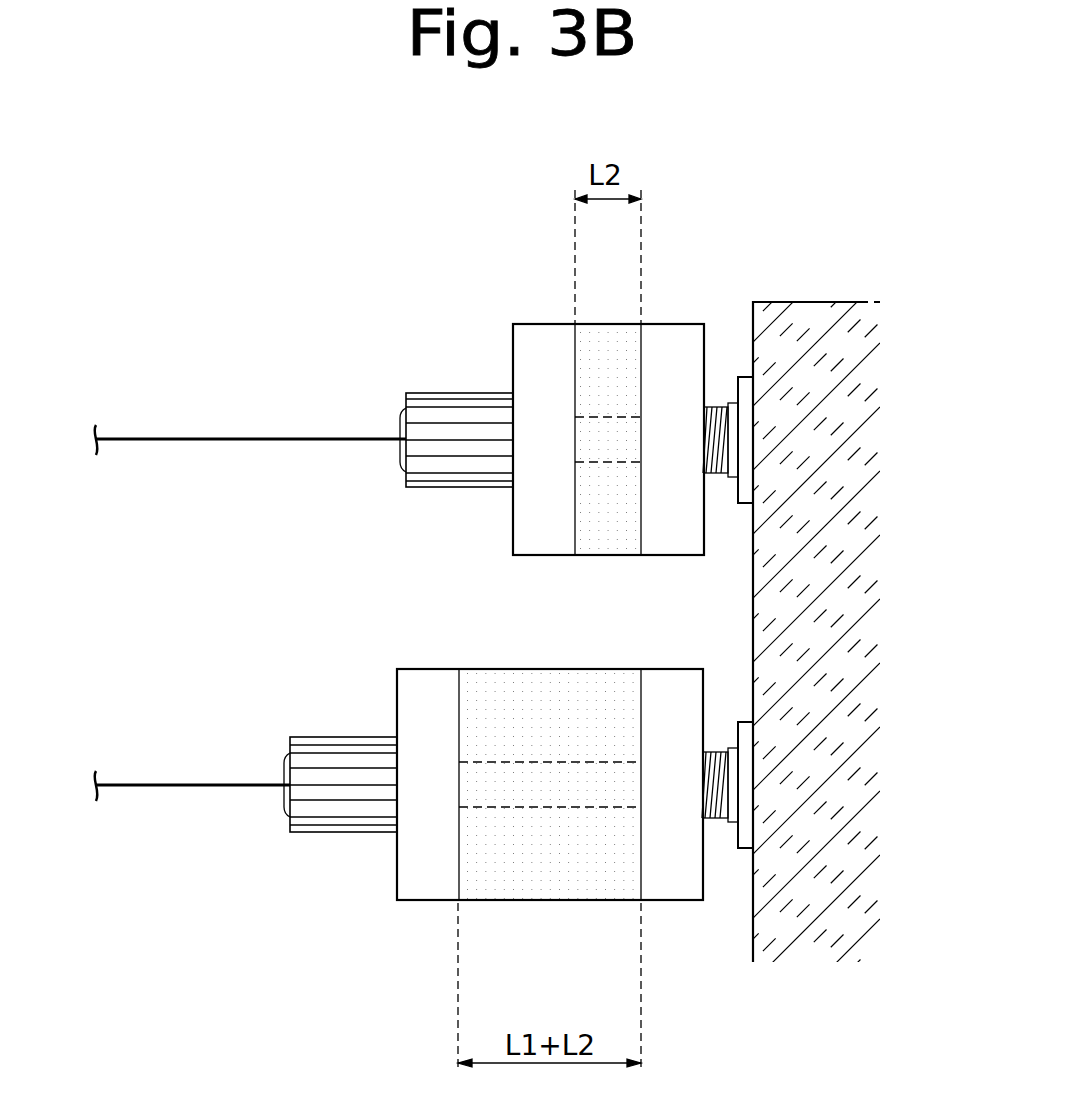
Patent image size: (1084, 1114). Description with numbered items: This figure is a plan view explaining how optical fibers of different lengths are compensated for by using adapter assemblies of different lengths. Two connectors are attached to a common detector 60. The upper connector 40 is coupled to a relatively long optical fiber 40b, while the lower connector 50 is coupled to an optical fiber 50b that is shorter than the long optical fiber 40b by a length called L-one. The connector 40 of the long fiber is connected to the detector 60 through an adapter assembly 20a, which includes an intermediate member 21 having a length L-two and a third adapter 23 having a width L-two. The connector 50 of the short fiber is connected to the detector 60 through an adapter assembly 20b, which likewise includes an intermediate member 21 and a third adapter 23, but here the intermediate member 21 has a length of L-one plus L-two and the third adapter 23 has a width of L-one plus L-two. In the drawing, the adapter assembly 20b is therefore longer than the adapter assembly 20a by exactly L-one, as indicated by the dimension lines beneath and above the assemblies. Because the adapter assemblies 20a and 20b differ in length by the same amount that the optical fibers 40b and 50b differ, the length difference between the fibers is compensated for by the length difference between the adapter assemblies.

The adapter assembly 20a is at (682, 338).
The adapter assembly 20b is at (682, 902).
The intermediate member 21 is at (607, 422).
The third adapter 23 is at (597, 543).
The connector 40 is at (458, 392).
The long optical fiber 40b is at (258, 437).
The connector 50 is at (340, 736).
The short optical fiber 50b is at (212, 783).
The detector 60 is at (803, 301).